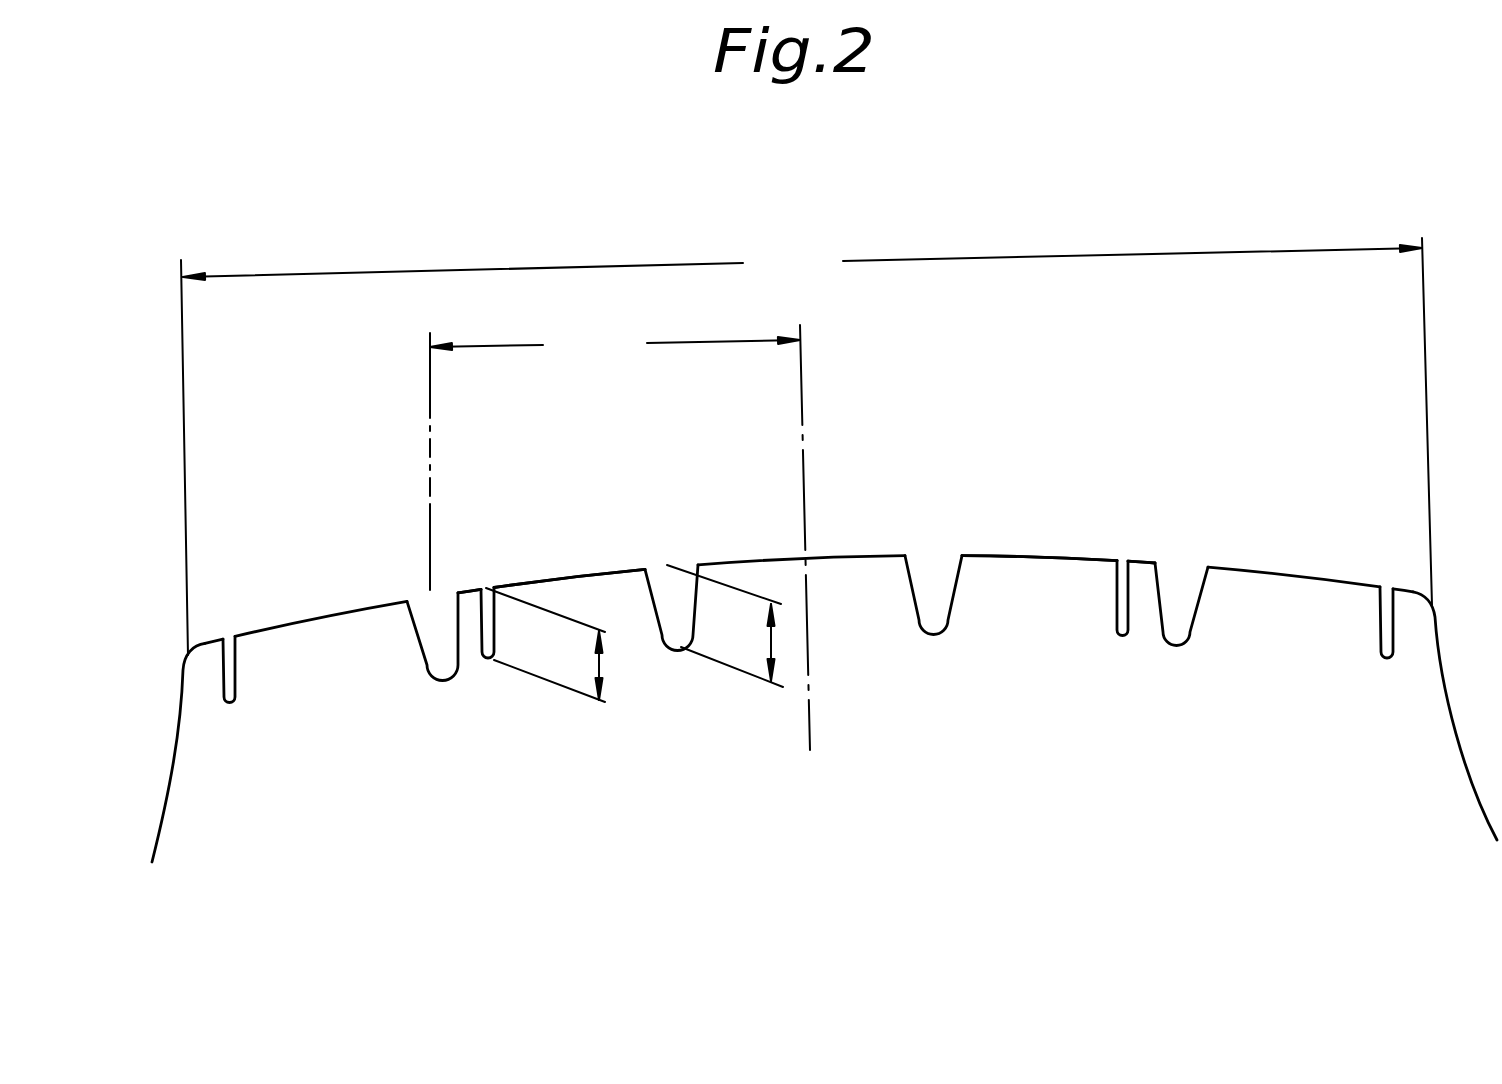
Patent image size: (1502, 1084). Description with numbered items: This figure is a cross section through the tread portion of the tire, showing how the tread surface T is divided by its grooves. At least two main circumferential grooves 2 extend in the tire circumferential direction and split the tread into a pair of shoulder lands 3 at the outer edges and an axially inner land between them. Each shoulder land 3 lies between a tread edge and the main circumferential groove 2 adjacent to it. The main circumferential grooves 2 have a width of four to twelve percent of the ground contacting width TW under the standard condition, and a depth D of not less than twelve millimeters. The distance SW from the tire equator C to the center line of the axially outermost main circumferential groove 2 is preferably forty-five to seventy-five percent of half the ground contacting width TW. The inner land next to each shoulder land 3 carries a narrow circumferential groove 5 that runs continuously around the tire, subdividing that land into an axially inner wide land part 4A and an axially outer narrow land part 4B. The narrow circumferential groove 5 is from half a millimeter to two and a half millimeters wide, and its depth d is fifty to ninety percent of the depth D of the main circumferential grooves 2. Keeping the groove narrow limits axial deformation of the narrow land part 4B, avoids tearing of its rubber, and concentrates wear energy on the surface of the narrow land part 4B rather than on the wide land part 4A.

The main circumferential groove 2 is at (442, 587).
The shoulder land 3 is at (304, 635).
The axially inner wide land part 4A is at (552, 577).
The axially outer narrow land part 4B is at (470, 600).
The narrow circumferential groove 5 is at (488, 658).
The tread surface T is at (418, 595).
The tire equator C is at (803, 426).
The ground contacting width TW is at (806, 446).
The distance from tire equator to outermost main groove center line SW is at (615, 341).
The depth of narrow circumferential groove d is at (600, 663).
The depth of main circumferential groove D is at (770, 626).